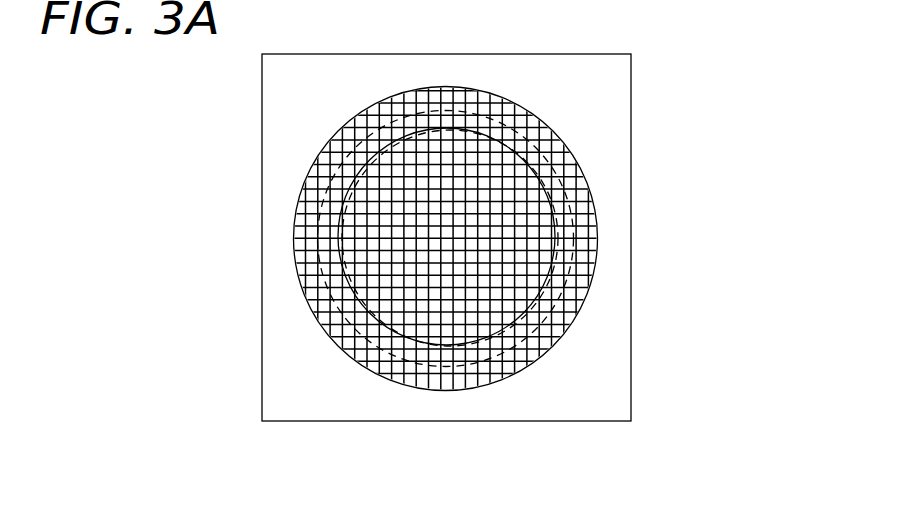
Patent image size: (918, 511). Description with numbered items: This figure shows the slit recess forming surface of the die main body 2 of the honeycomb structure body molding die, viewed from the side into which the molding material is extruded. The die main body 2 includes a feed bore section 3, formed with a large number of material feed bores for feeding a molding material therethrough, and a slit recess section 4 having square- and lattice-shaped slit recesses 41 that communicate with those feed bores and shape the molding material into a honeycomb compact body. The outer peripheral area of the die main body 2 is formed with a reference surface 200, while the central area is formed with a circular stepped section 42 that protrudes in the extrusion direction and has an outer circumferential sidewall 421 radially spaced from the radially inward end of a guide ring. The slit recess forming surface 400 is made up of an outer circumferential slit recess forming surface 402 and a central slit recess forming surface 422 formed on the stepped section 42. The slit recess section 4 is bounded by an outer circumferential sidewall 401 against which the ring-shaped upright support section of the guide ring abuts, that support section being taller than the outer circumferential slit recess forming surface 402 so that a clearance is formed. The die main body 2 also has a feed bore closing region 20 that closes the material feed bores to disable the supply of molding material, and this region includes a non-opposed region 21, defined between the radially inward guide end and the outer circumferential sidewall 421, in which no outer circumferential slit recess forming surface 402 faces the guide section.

The die main body 2 is at (658, 79).
The feed bore section 3 is at (642, 378).
The slit recess section 4 is at (515, 255).
The feed bore closing region 20 is at (308, 301).
The non-opposed region 21 is at (294, 256).
The slit recesses 41 is at (452, 150).
The circular stepped section 42 is at (498, 308).
The reference surface 200 is at (293, 403).
The slit recess forming surface 400 is at (430, 297).
The outer circumferential sidewall 401 is at (305, 181).
The outer circumferential slit recess forming surface 402 is at (345, 150).
The outer circumferential sidewall 421 is at (372, 158).
The central slit recess forming surface 422 is at (485, 195).